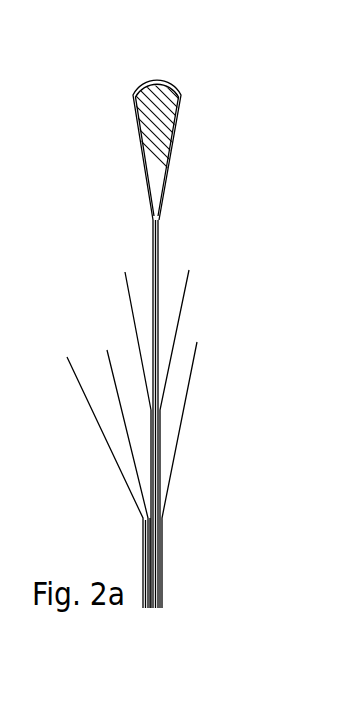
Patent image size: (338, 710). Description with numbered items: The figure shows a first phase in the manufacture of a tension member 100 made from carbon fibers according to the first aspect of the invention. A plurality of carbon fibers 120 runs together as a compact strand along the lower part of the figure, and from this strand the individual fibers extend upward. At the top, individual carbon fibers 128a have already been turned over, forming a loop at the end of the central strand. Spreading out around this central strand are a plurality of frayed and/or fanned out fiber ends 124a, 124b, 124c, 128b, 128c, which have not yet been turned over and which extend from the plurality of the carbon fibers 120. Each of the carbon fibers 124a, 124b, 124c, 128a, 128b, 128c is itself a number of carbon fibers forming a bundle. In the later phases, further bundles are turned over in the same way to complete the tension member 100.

The tension member 100 is at (86, 50).
The turned-over carbon fibers 128a is at (132, 97).
The fiber end 124a is at (125, 276).
The fiber end 124b is at (105, 356).
The fiber end 124c is at (73, 372).
The fiber end 128b is at (188, 282).
The fiber end 128c is at (197, 347).
The carbon fibers 120 is at (163, 578).